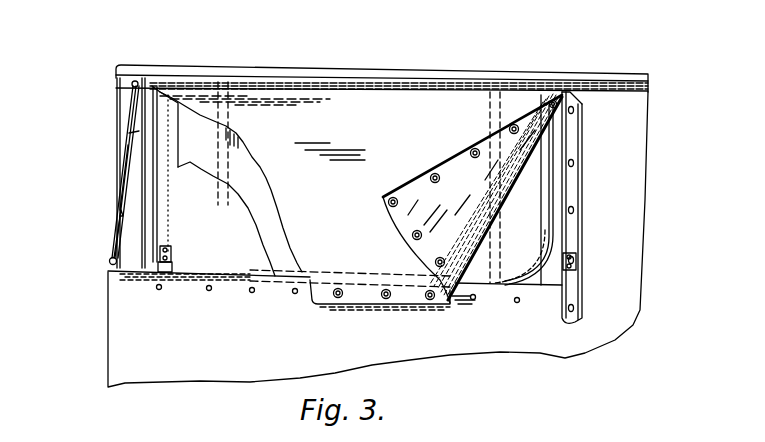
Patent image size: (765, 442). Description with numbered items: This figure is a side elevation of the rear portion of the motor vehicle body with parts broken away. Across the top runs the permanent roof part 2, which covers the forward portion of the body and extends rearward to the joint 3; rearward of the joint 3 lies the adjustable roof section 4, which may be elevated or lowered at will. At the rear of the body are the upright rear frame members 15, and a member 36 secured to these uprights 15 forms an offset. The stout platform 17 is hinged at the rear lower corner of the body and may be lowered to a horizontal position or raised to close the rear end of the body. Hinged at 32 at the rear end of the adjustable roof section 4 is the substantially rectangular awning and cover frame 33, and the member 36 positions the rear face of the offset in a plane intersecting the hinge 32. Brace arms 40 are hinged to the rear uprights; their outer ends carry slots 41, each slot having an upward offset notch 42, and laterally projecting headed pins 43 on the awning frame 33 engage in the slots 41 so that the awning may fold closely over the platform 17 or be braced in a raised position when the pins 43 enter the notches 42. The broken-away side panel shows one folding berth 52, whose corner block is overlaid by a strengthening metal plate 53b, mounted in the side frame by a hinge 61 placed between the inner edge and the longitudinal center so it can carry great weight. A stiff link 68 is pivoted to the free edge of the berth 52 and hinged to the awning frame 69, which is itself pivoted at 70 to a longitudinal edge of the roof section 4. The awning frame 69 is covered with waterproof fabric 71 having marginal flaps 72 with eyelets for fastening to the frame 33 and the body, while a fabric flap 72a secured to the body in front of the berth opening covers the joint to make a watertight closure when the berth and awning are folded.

The permanent roof part 2 is at (597, 80).
The joint 3 is at (565, 92).
The adjustable roof section 4 is at (373, 73).
The upright rear frame member 15 is at (148, 191).
The platform 17 is at (136, 260).
The hinge 32 is at (134, 138).
The awning and cover frame 33 is at (118, 126).
The offset member 36 is at (146, 97).
The brace arm 40 is at (124, 162).
The slot 41 is at (118, 238).
The offset notch 42 is at (110, 262).
The headed pin 43 is at (122, 212).
The berth 52 is at (226, 219).
The metal plate 53b is at (162, 272).
The hinge 61 is at (167, 251).
The stiff link 68 is at (232, 172).
The awning frame 69 is at (556, 229).
The pivot 70 is at (336, 140).
The waterproof fabric 71 is at (406, 199).
The marginal flap 72 is at (365, 299).
The fabric flap 72a is at (576, 182).